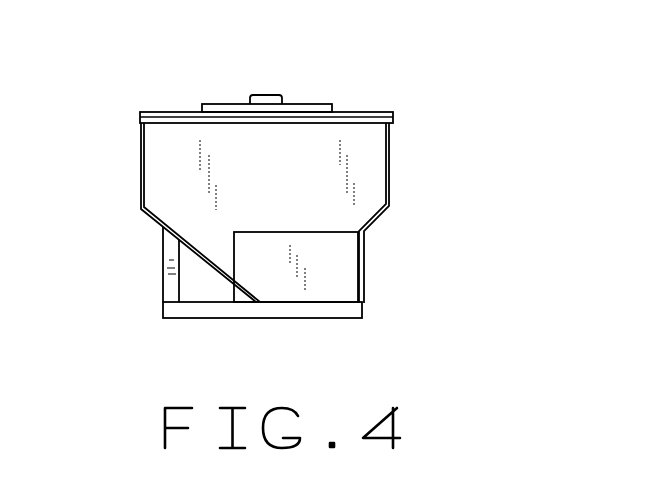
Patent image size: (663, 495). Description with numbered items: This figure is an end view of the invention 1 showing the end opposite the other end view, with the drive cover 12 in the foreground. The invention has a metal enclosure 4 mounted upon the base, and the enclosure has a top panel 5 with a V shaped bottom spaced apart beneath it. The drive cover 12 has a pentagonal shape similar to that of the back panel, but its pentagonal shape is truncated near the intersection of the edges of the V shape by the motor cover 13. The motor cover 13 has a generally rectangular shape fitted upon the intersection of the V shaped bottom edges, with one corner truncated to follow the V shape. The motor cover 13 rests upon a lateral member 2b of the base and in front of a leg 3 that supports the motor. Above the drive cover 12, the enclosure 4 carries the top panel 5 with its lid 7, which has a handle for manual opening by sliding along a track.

The container assembly 1 is at (127, 78).
The top panel 5 is at (174, 113).
The lid 7 is at (270, 93).
The metal enclosure 4 is at (141, 188).
The drive cover 12 is at (353, 177).
The motor cover 13 is at (323, 280).
The support wall 3 is at (163, 273).
The lateral member 2b is at (315, 311).